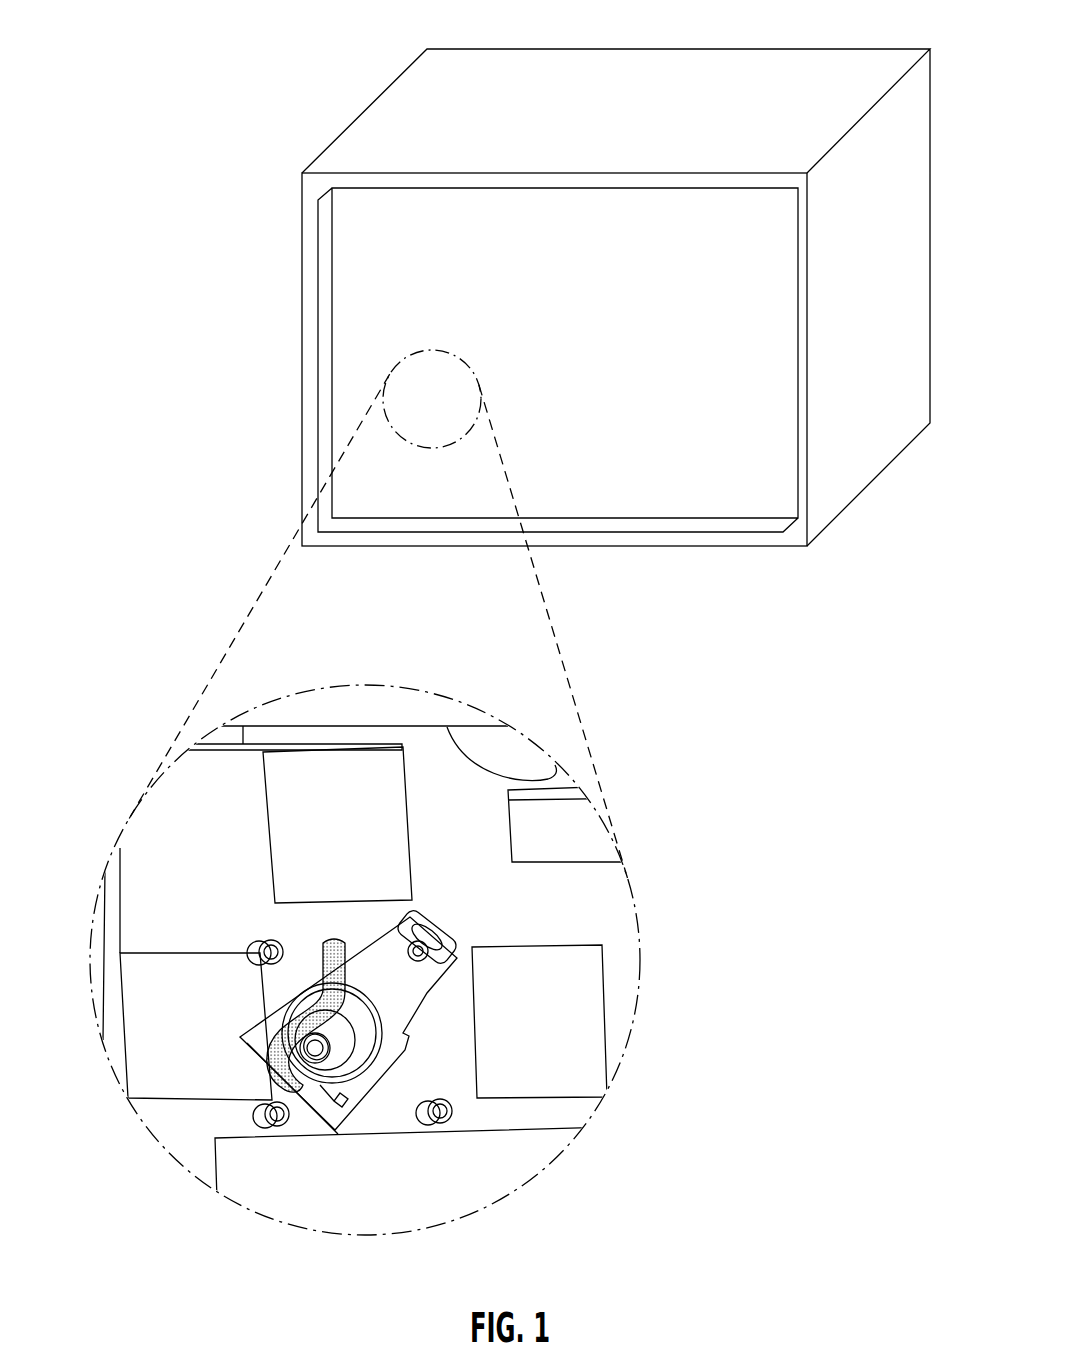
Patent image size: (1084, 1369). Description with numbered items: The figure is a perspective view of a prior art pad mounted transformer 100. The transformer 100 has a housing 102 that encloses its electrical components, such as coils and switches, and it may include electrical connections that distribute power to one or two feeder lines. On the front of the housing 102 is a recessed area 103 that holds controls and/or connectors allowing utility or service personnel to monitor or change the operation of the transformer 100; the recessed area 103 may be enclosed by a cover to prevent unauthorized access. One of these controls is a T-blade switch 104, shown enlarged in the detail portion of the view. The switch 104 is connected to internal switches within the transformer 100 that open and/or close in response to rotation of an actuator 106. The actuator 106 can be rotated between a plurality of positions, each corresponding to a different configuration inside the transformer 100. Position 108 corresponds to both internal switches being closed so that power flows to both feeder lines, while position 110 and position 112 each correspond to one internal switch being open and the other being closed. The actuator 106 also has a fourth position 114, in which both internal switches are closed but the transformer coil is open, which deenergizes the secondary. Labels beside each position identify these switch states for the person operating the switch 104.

The pad mounted transformer 100 is at (311, 56).
The housing 102 is at (751, 64).
The recessed area 103 is at (757, 437).
The T-blade switch 104 is at (467, 366).
The actuator 106 is at (320, 978).
The position 108 is at (322, 787).
The position 110 is at (127, 984).
The position 112 is at (591, 977).
The fourth position 114 is at (358, 1206).